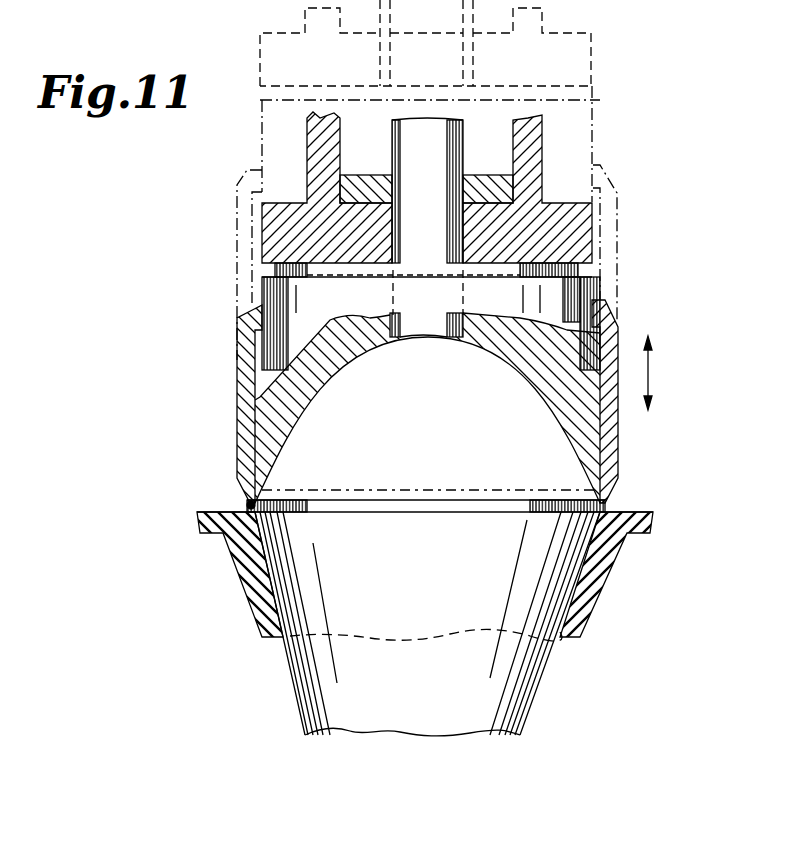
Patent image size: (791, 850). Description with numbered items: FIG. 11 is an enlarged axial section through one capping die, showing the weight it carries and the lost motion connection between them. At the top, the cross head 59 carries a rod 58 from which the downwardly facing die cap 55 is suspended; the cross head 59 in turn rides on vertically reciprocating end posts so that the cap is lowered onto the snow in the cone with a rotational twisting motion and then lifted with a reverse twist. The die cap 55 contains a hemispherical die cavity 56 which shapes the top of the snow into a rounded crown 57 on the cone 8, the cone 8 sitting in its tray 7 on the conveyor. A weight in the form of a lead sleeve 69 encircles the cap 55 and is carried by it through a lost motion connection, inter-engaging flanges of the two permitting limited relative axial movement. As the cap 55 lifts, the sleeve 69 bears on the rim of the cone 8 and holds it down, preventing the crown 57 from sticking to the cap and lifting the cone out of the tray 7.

The tray 7 is at (243, 580).
The cone 8 is at (318, 683).
The die cap 55 is at (580, 104).
The hemispherical die cavity 56 is at (300, 427).
The crown 57 is at (369, 375).
The rod 58 is at (407, 137).
The cross head 59 is at (597, 68).
The lead sleeve 69 is at (240, 234).